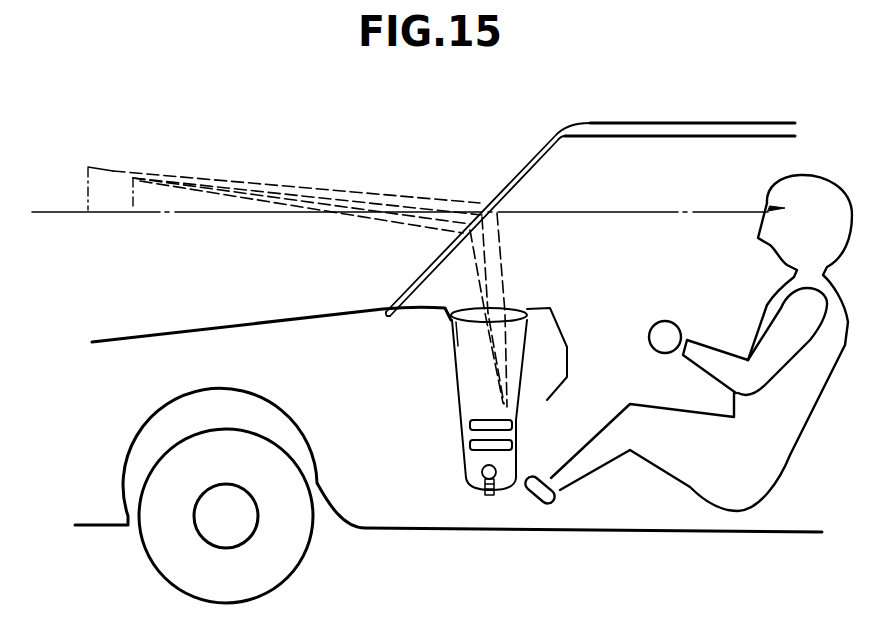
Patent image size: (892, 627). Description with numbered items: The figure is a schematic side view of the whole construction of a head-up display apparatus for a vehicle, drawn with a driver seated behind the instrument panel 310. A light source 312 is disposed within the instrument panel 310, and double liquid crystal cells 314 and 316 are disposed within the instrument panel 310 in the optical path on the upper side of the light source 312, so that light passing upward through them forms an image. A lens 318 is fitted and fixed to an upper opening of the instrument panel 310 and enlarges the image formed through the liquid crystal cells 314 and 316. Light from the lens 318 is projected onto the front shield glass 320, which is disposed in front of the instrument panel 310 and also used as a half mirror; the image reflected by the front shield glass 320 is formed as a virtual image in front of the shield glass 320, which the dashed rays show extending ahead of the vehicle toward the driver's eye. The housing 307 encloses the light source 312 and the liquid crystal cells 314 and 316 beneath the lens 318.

The front shield glass 320 is at (541, 152).
The instrument panel 310 is at (540, 307).
The camera housing 307 is at (520, 425).
The lens 318 is at (456, 347).
The liquid crystal cell 316 is at (465, 422).
The liquid crystal cell 314 is at (478, 480).
The light source 312 is at (494, 496).